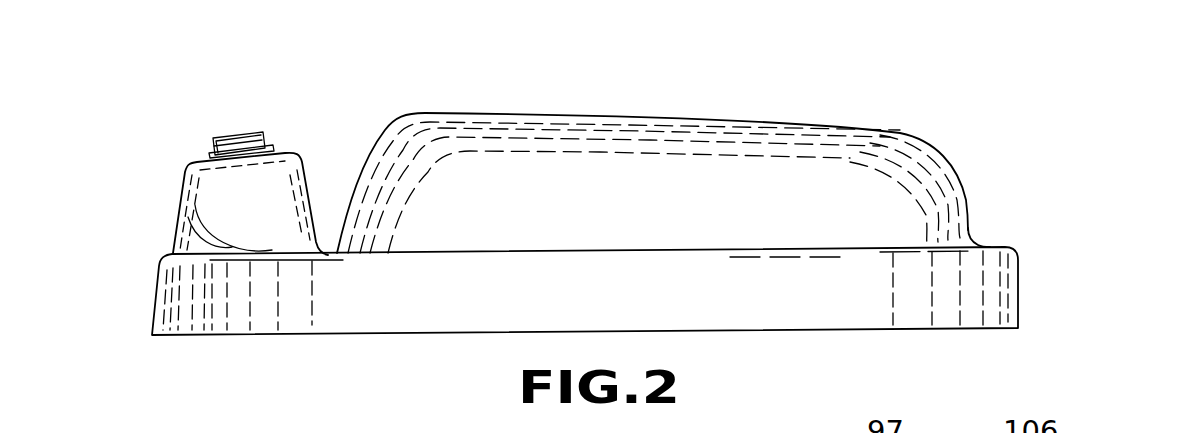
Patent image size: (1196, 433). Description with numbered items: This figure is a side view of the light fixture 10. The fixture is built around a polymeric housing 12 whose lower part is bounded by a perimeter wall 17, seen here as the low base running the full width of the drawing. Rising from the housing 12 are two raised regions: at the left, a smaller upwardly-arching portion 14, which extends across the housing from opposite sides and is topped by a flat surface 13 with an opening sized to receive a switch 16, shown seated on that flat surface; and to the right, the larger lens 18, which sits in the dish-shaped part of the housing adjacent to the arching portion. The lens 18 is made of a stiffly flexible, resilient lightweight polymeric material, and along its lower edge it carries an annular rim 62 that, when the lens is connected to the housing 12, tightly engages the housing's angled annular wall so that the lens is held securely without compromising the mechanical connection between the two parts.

The light fixture 10 is at (642, 216).
The polymeric housing 12 is at (1062, 298).
The flat surface 13 is at (282, 140).
The upwardly-arching portion 14 is at (308, 195).
The switch 16 is at (237, 142).
The perimeter wall 17 is at (352, 297).
The lens 18 is at (877, 158).
The annular rim 62 is at (975, 238).